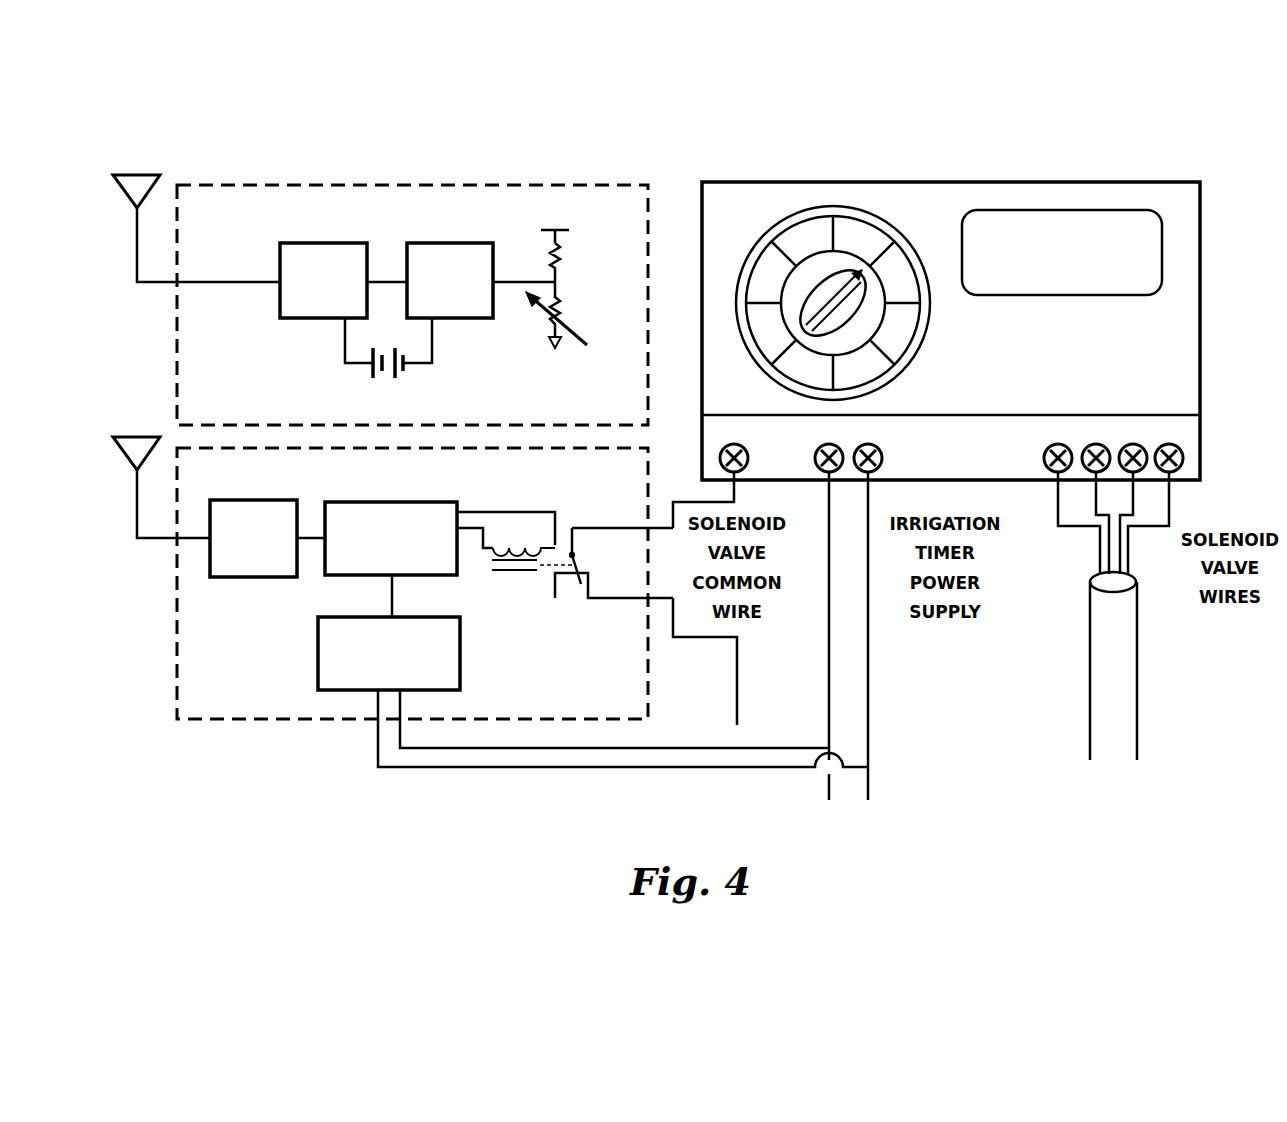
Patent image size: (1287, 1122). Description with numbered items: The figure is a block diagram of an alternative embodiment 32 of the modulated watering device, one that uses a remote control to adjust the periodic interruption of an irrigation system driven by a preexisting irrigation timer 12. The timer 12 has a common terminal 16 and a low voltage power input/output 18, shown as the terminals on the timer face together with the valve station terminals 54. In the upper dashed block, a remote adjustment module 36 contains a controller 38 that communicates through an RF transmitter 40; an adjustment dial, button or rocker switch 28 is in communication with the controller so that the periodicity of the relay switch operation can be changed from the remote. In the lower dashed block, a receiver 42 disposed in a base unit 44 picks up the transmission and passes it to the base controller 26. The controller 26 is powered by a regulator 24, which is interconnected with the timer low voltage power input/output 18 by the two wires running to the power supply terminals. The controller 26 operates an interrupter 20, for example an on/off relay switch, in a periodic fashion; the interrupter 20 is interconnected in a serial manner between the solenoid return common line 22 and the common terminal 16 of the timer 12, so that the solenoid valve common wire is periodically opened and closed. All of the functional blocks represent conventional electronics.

The irrigation timer 12 is at (941, 300).
The common terminal 16 is at (720, 452).
The low voltage power input/output 18 is at (857, 430).
The interrupter 20 is at (520, 512).
The solenoid return common line 22 is at (730, 710).
The regulator 24 is at (462, 668).
The controller 26 is at (392, 502).
The adjustment dial, button, or rocker switch 28 is at (560, 277).
The alternative embodiment 32 is at (383, 270).
The remote adjustment module 36 is at (333, 184).
The controller 38 is at (425, 243).
The RF transmitter 40 is at (300, 243).
The receiver 42 is at (224, 578).
The base unit 44 is at (210, 720).
The solenoid valve terminals 54 is at (1118, 418).